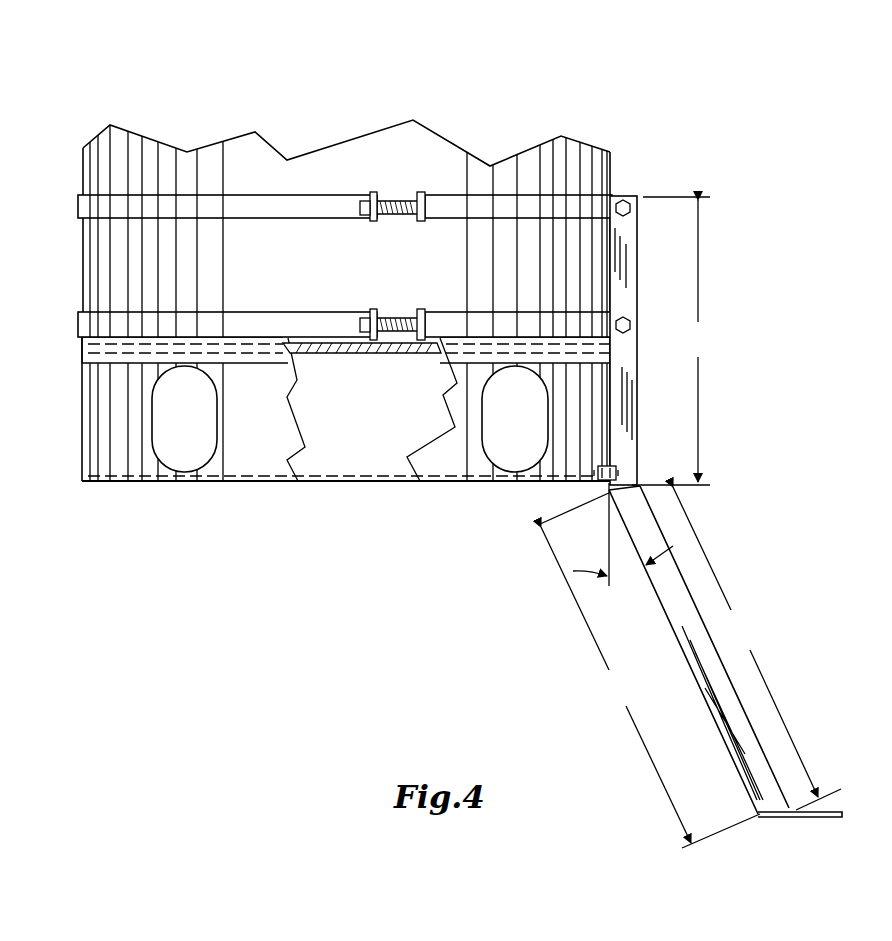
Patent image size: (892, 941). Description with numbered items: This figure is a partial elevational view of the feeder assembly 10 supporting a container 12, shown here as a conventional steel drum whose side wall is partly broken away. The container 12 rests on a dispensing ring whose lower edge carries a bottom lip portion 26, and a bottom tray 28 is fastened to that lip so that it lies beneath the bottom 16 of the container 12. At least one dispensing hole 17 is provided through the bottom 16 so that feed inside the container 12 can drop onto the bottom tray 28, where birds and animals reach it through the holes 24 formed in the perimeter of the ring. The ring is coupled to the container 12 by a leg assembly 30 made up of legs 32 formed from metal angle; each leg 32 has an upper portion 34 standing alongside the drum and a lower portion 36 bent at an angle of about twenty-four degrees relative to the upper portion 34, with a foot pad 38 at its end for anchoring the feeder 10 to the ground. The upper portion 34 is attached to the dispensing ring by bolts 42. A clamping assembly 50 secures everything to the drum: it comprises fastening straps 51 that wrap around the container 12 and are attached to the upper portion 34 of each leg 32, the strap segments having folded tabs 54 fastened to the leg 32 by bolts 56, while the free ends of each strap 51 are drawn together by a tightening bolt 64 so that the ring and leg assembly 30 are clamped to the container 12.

The feeder assembly 10 is at (678, 75).
The container 12 is at (563, 275).
The bottom 16 is at (402, 352).
The dispensing hole 17 is at (327, 352).
The holes 24 is at (178, 453).
The bottom lip portion 26 is at (80, 475).
The bottom tray 28 is at (345, 470).
The leg assembly 30 is at (727, 176).
The leg 32 is at (725, 512).
The upper portion 34 is at (620, 265).
The lower portion 36 is at (731, 710).
The foot pad 38 is at (811, 817).
The bolts 42 is at (620, 469).
The clamping assembly 50 is at (72, 195).
The fastening strap 51 is at (250, 320).
The tab 54 is at (622, 314).
The bolts 56 is at (624, 196).
The tightening bolt 64 is at (390, 203).